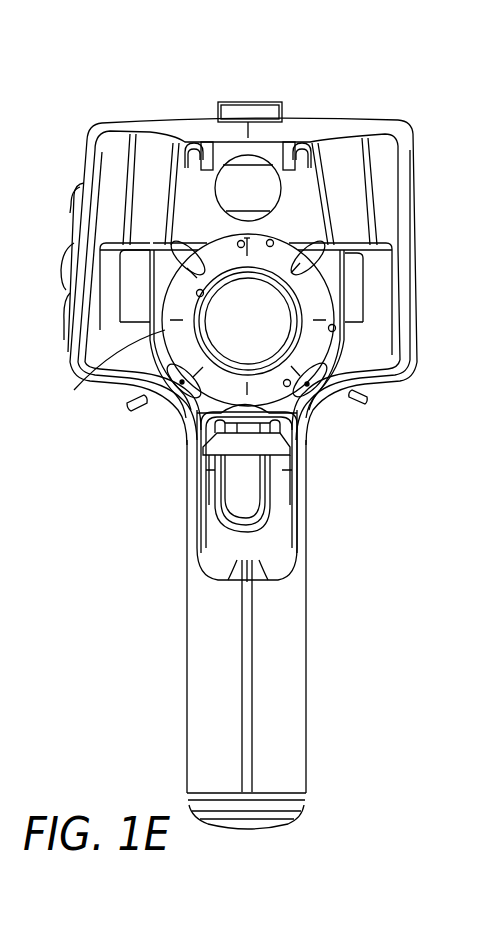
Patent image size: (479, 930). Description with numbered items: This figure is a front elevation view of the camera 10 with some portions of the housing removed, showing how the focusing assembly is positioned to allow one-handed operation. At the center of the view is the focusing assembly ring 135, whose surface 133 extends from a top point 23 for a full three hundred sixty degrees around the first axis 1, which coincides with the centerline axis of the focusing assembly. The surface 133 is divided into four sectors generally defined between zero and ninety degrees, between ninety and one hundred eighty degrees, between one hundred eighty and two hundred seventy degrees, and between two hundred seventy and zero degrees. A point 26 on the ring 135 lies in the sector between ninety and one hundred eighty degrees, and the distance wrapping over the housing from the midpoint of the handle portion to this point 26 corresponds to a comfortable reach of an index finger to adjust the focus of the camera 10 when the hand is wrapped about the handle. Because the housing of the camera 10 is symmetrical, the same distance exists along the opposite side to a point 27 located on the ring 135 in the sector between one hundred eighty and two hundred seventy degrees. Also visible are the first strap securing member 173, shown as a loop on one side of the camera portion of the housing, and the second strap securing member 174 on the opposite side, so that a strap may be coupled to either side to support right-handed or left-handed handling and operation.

The camera 10 is at (98, 118).
The first axis 1 is at (248, 320).
The top point 23 is at (263, 238).
The focusing assembly ring 135 is at (322, 284).
The surface 133 is at (96, 364).
The first strap securing member 173 is at (130, 414).
The second strap securing member 174 is at (368, 399).
The point 27 is at (180, 386).
The point 26 is at (309, 386).